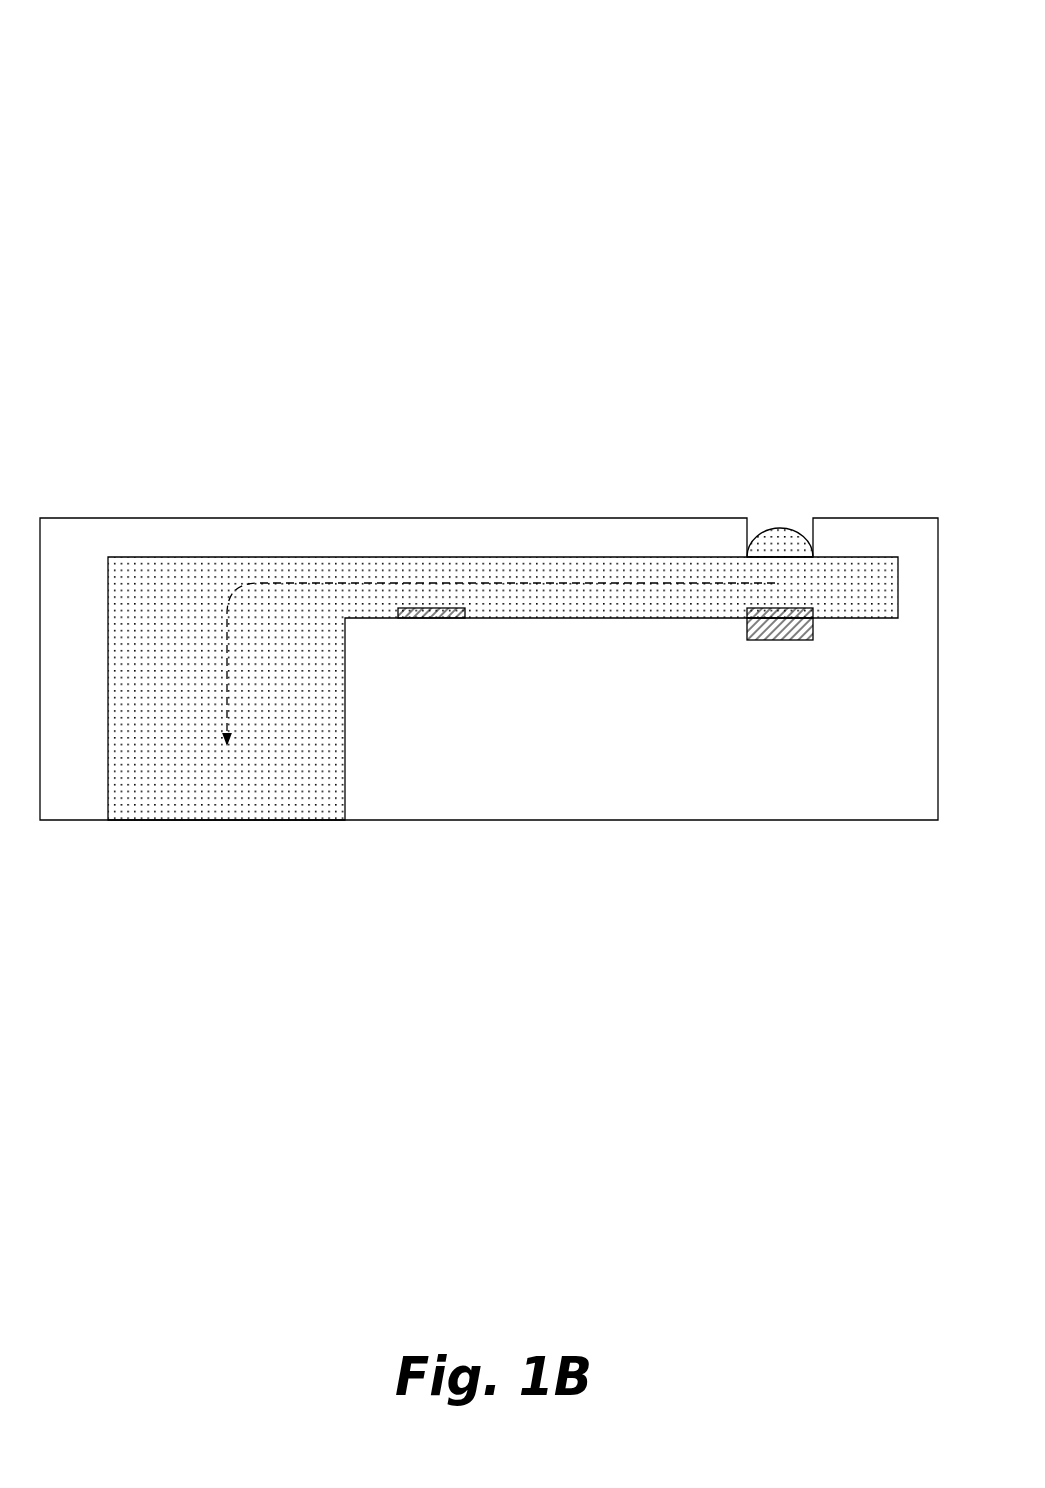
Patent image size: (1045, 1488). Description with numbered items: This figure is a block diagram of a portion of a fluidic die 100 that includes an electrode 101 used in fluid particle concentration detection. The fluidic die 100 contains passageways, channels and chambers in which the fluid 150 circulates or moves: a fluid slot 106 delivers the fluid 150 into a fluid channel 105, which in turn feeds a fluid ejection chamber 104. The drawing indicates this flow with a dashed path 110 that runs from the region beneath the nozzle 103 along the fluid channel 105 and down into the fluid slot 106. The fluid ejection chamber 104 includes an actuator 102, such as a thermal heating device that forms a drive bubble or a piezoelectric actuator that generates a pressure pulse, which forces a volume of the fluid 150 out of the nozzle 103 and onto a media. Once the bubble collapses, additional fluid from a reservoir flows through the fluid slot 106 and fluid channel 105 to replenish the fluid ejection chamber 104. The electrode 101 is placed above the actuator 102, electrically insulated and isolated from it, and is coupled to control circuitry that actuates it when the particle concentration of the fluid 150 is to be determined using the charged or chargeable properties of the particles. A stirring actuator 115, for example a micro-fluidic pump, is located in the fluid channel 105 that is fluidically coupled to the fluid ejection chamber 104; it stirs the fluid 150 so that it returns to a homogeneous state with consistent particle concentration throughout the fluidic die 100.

The fluidic die 100 is at (178, 103).
The electrode 101 is at (746, 609).
The actuator 102 is at (782, 640).
The nozzle 103 is at (779, 516).
The fluid ejection chamber 104 is at (789, 584).
The fluid channel 105 is at (521, 594).
The fluid slot 106 is at (222, 796).
The light path 110 is at (258, 583).
The stirring actuator 115 is at (432, 618).
The fluid 150 is at (140, 600).